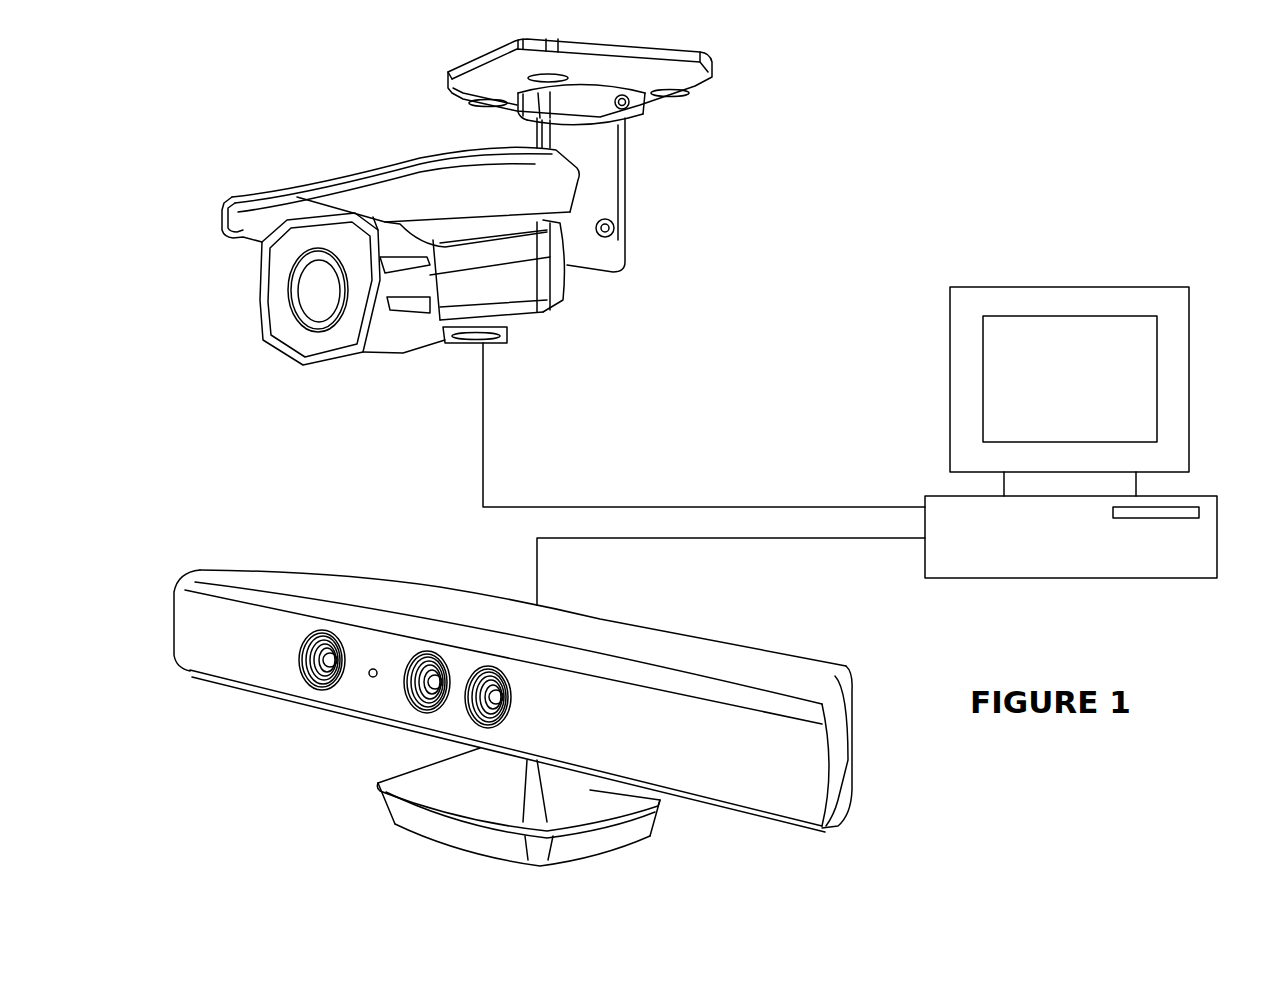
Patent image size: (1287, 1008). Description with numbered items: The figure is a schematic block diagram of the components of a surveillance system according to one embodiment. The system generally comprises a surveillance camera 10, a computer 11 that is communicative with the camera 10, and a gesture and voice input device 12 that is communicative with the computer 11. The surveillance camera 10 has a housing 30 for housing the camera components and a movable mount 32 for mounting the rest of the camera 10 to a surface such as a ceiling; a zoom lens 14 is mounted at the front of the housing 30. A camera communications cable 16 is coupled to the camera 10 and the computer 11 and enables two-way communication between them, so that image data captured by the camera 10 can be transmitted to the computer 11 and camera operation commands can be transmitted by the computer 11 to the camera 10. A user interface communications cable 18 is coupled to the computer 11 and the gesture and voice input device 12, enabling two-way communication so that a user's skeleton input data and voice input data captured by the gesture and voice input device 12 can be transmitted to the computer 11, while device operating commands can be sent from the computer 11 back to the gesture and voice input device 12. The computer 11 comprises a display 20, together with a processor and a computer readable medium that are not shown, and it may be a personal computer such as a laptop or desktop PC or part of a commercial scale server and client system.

The surveillance camera 10 is at (706, 325).
The computer 11 is at (1234, 587).
The gesture and voice input device 12 is at (391, 588).
The zoom lens 14 is at (298, 314).
The camera communications cable 16 is at (757, 505).
The user interface communications cable 18 is at (754, 540).
The display 20 is at (1017, 377).
The housing 30 is at (403, 357).
The movable mount 32 is at (633, 148).